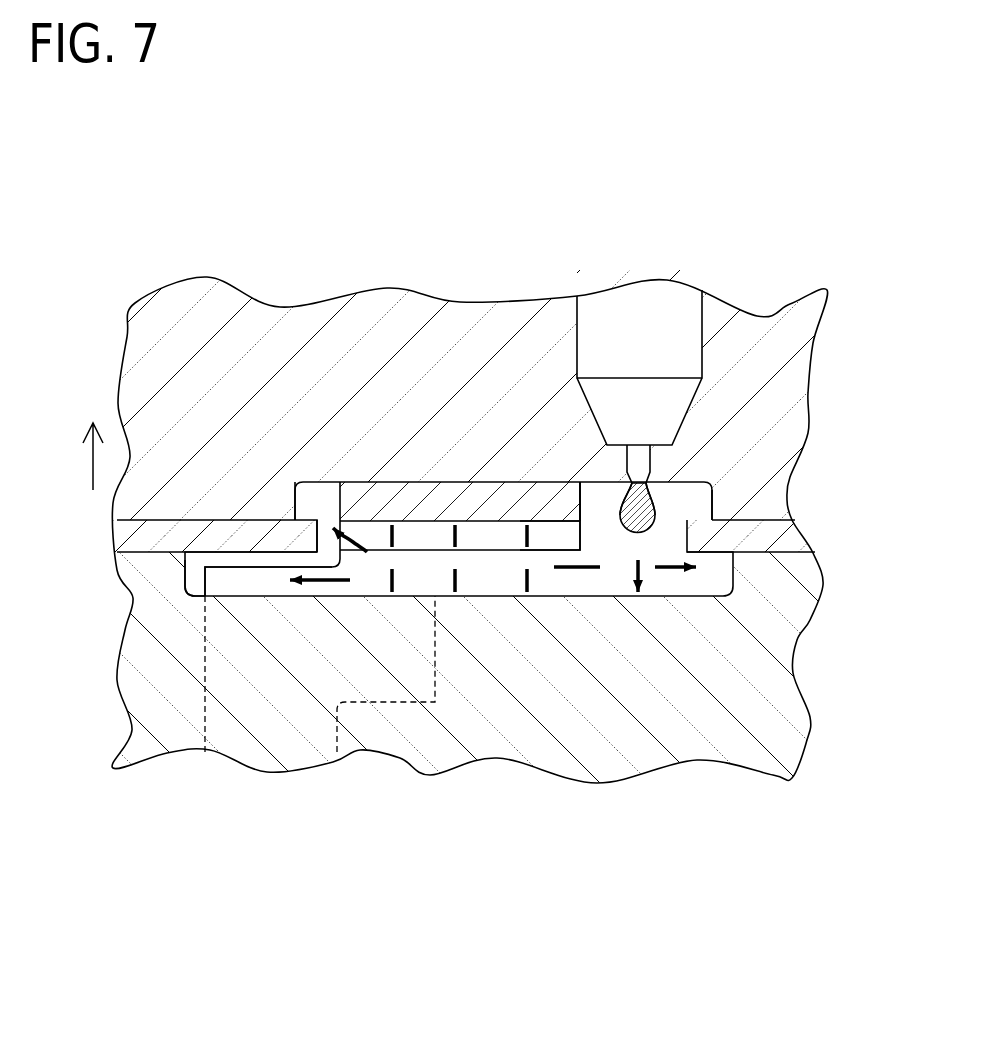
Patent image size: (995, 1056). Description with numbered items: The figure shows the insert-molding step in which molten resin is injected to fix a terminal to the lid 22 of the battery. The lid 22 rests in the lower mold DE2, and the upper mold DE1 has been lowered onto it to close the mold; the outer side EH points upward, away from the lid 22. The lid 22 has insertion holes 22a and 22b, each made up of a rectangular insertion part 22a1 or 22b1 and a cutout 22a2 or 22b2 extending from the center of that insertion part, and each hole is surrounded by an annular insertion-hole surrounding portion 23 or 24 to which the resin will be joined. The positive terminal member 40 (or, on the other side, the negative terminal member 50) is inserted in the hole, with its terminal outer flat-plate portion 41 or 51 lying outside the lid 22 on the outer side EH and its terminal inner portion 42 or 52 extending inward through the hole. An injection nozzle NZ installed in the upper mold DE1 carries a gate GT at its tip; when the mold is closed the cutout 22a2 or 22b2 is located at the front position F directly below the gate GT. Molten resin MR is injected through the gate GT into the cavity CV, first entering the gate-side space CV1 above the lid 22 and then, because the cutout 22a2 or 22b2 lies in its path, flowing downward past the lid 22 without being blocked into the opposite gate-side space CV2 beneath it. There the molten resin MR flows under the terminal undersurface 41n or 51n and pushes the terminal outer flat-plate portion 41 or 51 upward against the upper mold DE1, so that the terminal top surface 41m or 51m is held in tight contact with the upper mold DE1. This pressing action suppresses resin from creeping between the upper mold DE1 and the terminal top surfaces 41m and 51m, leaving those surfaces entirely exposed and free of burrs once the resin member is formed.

The lid 22 is at (172, 540).
The insertion-hole surrounding portion 23 is at (466, 532).
The insertion-hole surrounding portion 24 is at (778, 797).
The upper mold DE1 is at (267, 343).
The lower mold DE2 is at (573, 745).
The insertion hole 22a is at (343, 383).
The insertion hole 22b is at (320, 527).
The insertion part 22a1 is at (267, 693).
The insertion part 22b1 is at (318, 548).
The cutout 22a2 is at (708, 723).
The cutout 22b2 is at (687, 543).
The terminal inner portion 42 is at (215, 699).
The terminal inner portion 52 is at (248, 578).
The terminal outer flat-plate portion 41 is at (392, 399).
The terminal outer flat-plate portion 51 is at (458, 500).
The terminal top surface 41m is at (460, 330).
The terminal top surface 51m is at (412, 482).
The terminal undersurface 41n is at (295, 725).
The terminal undersurface 51n is at (340, 568).
The positive terminal member 40 is at (558, 383).
The negative terminal member 50 is at (535, 500).
The injection nozzle NZ is at (635, 323).
The gate GT is at (653, 497).
The molten resin MR is at (656, 516).
The front position F is at (638, 535).
The cavity CV is at (550, 572).
The gate-side space CV1 is at (603, 512).
The opposite gate-side space CV2 is at (485, 572).
The outer side EH is at (78, 456).